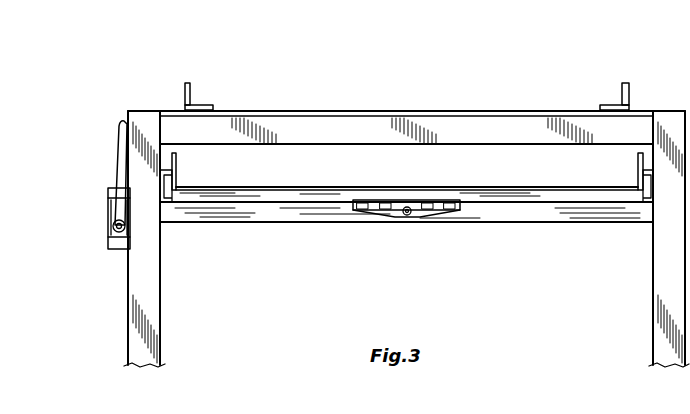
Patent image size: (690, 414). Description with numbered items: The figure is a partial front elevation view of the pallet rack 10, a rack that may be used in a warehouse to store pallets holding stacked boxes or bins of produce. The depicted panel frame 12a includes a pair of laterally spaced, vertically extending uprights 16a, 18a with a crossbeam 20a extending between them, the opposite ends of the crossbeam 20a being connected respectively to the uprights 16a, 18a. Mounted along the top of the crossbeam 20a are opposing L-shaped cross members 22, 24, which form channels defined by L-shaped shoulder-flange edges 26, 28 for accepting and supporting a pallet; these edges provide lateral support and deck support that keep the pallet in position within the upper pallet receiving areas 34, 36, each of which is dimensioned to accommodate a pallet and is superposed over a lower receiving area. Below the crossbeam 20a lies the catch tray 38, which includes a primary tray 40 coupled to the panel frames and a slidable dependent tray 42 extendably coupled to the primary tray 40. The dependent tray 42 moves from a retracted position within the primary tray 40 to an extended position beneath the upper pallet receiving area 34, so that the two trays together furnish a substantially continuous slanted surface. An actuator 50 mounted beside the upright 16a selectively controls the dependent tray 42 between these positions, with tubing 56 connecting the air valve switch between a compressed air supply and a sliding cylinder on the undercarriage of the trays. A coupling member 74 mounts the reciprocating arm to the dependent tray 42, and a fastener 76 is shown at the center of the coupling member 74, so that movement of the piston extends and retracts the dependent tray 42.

The pallet rack 10 is at (406, 99).
The panel frame 12a is at (164, 328).
The upright 16a is at (160, 278).
The upright 18a is at (655, 277).
The crossbeam 20a is at (318, 147).
The L-shaped cross member 22 is at (187, 82).
The L-shaped cross member 24 is at (626, 82).
The L-shaped shoulder-flange edge 26 is at (206, 104).
The L-shaped shoulder-flange edge 28 is at (608, 104).
The upper pallet receiving area 34 is at (217, 101).
The upper pallet receiving area 36 is at (597, 102).
The catch tray 38 is at (288, 227).
The primary tray 40 is at (492, 223).
The slidable dependent tray 42 is at (480, 186).
The actuator 50 is at (117, 252).
The tubing 56 is at (117, 140).
The coupling member 74 is at (427, 212).
The pivot bolt 76 is at (386, 212).